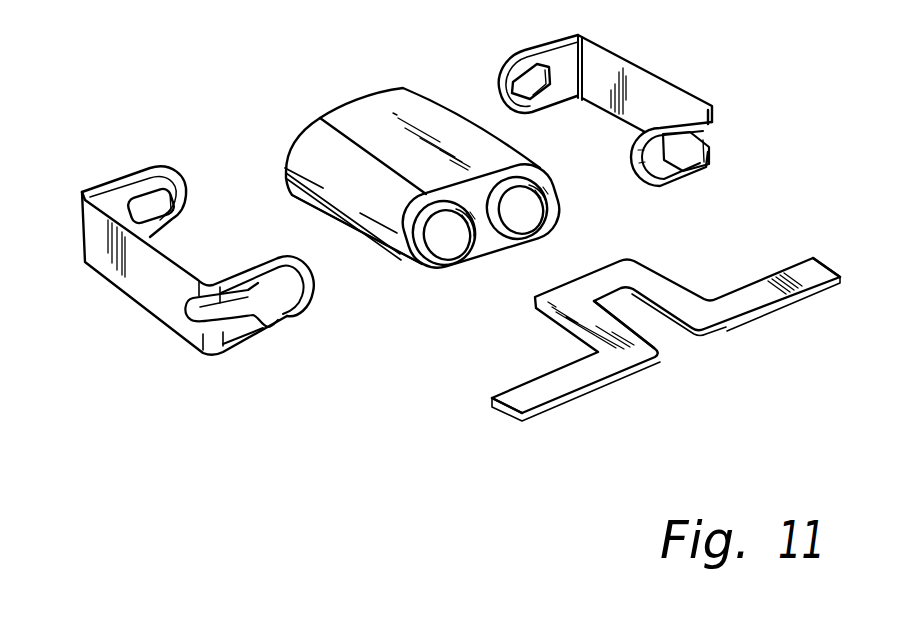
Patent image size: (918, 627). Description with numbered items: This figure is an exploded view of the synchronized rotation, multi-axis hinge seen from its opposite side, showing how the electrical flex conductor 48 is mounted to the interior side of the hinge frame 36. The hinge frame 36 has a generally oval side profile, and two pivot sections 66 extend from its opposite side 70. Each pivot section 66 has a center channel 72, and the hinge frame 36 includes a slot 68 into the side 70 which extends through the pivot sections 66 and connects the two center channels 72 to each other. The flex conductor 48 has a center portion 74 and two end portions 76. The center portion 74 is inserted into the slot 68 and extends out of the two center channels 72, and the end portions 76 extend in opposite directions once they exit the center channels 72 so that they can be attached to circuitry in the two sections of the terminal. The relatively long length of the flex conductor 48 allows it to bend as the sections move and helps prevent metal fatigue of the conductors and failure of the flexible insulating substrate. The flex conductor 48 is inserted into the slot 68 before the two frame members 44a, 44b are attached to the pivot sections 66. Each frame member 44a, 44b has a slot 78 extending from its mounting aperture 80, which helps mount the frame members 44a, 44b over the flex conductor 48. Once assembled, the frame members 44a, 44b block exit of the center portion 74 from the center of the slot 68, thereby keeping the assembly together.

The hinge frame 36 is at (452, 194).
The frame member 44a is at (137, 275).
The frame member 44b is at (640, 67).
The electrical flex conductor 48 is at (666, 366).
The pivot section 66 is at (428, 260).
The slot 68 is at (484, 229).
The side 70 is at (412, 254).
The center channel 72 is at (447, 239).
The center portion 74 is at (655, 338).
The end portion 76 is at (780, 307).
The slot 78 is at (710, 133).
The mounting aperture 80 is at (664, 168).